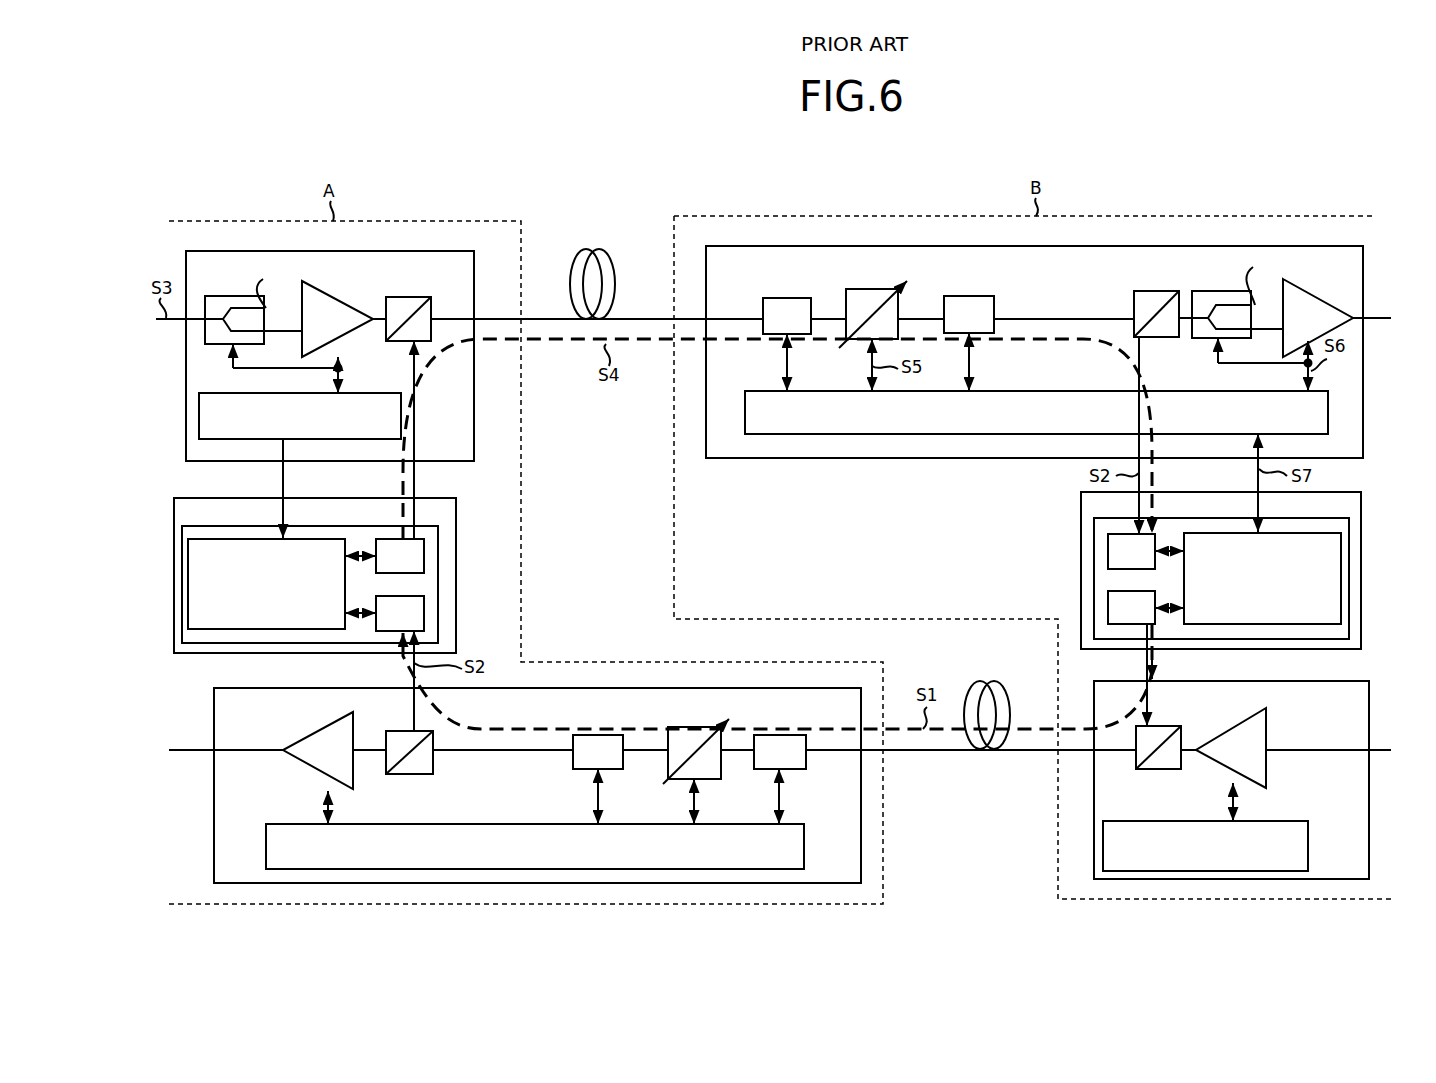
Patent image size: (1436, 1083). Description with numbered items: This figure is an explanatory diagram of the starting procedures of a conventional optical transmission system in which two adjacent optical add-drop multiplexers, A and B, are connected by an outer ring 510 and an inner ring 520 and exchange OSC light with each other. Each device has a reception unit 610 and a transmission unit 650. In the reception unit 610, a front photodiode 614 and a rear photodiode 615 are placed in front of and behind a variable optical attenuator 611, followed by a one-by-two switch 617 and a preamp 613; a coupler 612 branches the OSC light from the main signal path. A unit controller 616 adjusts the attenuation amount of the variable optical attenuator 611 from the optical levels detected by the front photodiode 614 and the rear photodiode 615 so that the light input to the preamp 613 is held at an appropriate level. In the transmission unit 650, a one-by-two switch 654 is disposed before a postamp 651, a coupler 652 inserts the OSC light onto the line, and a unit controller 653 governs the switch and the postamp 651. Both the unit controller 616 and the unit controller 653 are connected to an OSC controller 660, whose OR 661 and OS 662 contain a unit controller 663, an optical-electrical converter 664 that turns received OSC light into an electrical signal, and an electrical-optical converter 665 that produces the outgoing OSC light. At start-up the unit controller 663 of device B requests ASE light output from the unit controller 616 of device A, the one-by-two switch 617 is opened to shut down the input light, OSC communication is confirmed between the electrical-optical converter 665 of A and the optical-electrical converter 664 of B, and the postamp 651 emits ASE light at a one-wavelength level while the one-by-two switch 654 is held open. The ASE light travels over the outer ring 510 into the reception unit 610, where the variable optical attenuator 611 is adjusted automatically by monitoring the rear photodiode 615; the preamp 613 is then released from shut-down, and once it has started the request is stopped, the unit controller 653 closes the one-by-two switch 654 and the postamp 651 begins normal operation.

The outer ring 510 is at (646, 318).
The inner ring 520 is at (905, 752).
The reception unit 610 is at (1362, 262).
The variable optical attenuator 611 is at (878, 292).
The optical coupler / demultiplexer 612 is at (1148, 290).
The preamp 613 is at (1318, 300).
The front photodiode 614 is at (792, 297).
The rear photodiode 615 is at (973, 295).
The unit controller 616 is at (1327, 408).
The 1x2 switch 617 is at (1200, 290).
The transmission unit 650 is at (437, 250).
The postamp 651 is at (348, 298).
The optical coupler / multiplexer 652 is at (417, 296).
The unit controller 653 is at (198, 413).
The 1x2 switch 654 is at (216, 295).
The OSC controller 660 is at (435, 497).
The OR 661 is at (782, 554).
The OS 662 is at (199, 524).
The unit controller 663 is at (187, 584).
The optical-electrical converter 664 is at (423, 555).
The electrical-optical converter 665 is at (423, 612).